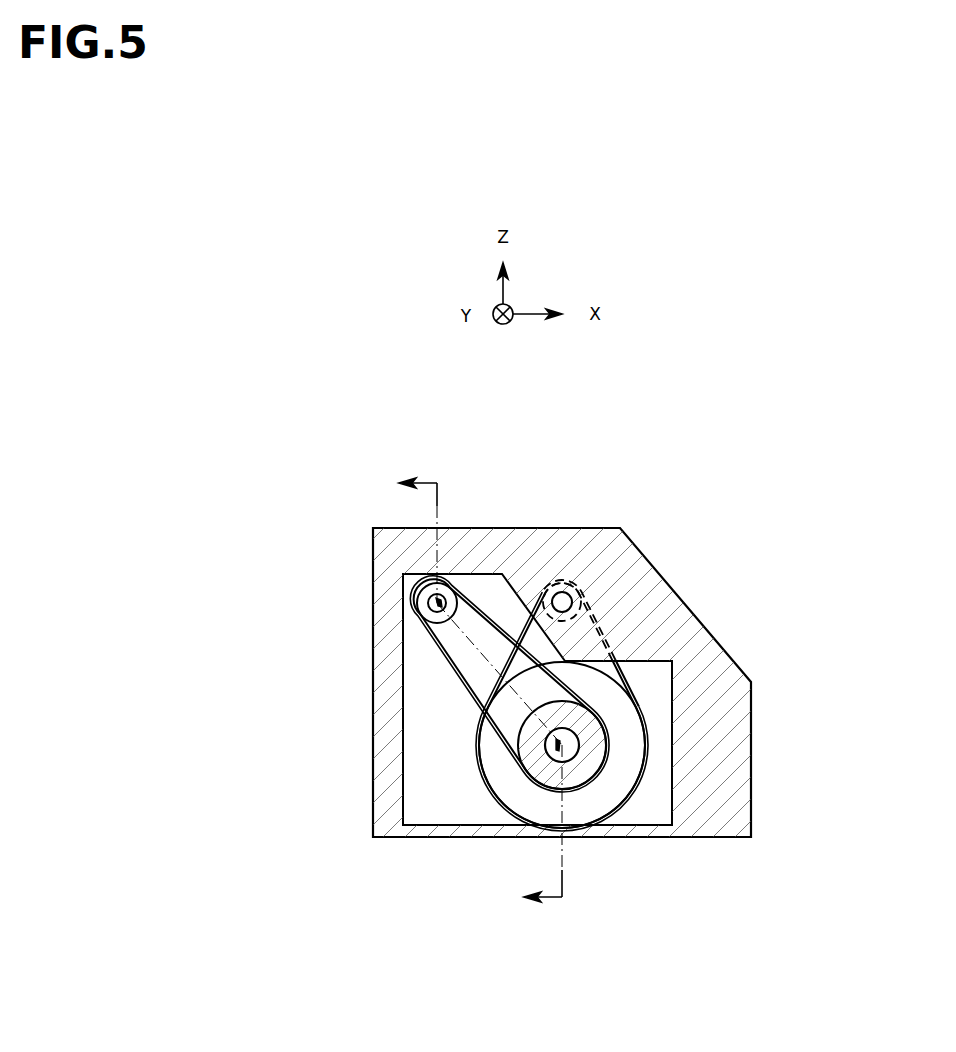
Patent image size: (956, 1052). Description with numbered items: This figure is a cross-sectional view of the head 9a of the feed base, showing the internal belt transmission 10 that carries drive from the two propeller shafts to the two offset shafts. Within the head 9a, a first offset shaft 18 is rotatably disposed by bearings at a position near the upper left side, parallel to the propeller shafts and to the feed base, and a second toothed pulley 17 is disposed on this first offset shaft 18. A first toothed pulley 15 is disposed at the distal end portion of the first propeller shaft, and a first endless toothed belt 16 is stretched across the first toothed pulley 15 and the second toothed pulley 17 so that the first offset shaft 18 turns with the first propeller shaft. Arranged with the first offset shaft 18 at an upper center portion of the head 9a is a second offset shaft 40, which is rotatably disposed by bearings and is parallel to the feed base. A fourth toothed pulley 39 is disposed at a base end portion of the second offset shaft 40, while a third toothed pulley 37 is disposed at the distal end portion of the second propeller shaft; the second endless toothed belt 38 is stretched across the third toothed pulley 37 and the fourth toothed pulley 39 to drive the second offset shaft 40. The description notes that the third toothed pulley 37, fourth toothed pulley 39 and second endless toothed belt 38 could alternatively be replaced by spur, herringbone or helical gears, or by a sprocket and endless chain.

The drive unit 10 is at (856, 410).
The head 9a is at (698, 618).
The first toothed pulley 15 is at (540, 783).
The first endless toothed belt 16 is at (447, 662).
The second toothed pulley 17 is at (418, 594).
The first offset shaft 18 is at (440, 600).
The third toothed pulley 37 is at (598, 824).
The second endless toothed belt 38 is at (630, 690).
The fourth toothed pulley 39 is at (580, 588).
The second offset shaft 40 is at (562, 600).